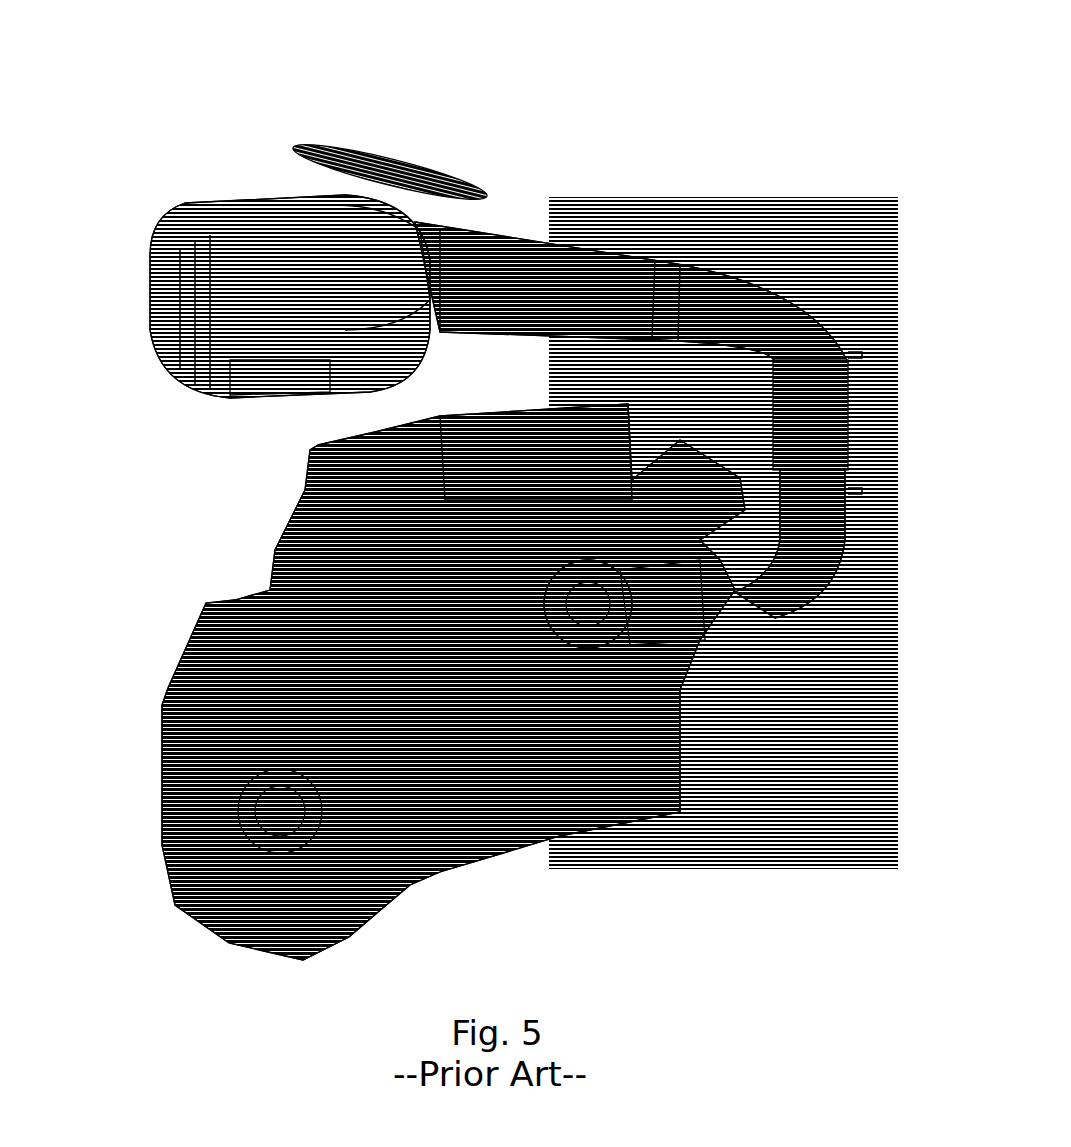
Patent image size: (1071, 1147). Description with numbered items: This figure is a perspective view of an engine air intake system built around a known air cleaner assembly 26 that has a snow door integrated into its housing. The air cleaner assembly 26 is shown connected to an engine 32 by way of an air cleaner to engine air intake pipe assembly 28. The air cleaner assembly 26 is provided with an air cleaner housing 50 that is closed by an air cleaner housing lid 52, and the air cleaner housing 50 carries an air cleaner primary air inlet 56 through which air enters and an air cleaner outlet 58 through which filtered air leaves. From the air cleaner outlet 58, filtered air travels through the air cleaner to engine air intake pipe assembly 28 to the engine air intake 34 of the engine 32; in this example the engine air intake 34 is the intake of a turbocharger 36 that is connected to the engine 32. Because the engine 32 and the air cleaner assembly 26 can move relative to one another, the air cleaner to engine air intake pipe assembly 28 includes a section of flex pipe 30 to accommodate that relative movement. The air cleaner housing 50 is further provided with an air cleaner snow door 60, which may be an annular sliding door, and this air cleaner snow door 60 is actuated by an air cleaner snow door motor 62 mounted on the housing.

The air cleaner assembly 26 is at (198, 168).
The air cleaner to engine air intake pipe assembly 28 is at (630, 240).
The flex pipe 30 is at (835, 432).
The engine 32 is at (325, 552).
The engine air intake 34 is at (775, 617).
The turbocharger 36 is at (710, 653).
The air cleaner housing 50 is at (207, 322).
The air cleaner housing lid 52 is at (162, 245).
The air cleaner primary air inlet 56 is at (385, 150).
The air cleaner outlet 58 is at (356, 257).
The air cleaner snow door 60 is at (270, 340).
The air cleaner snow door motor 62 is at (472, 298).